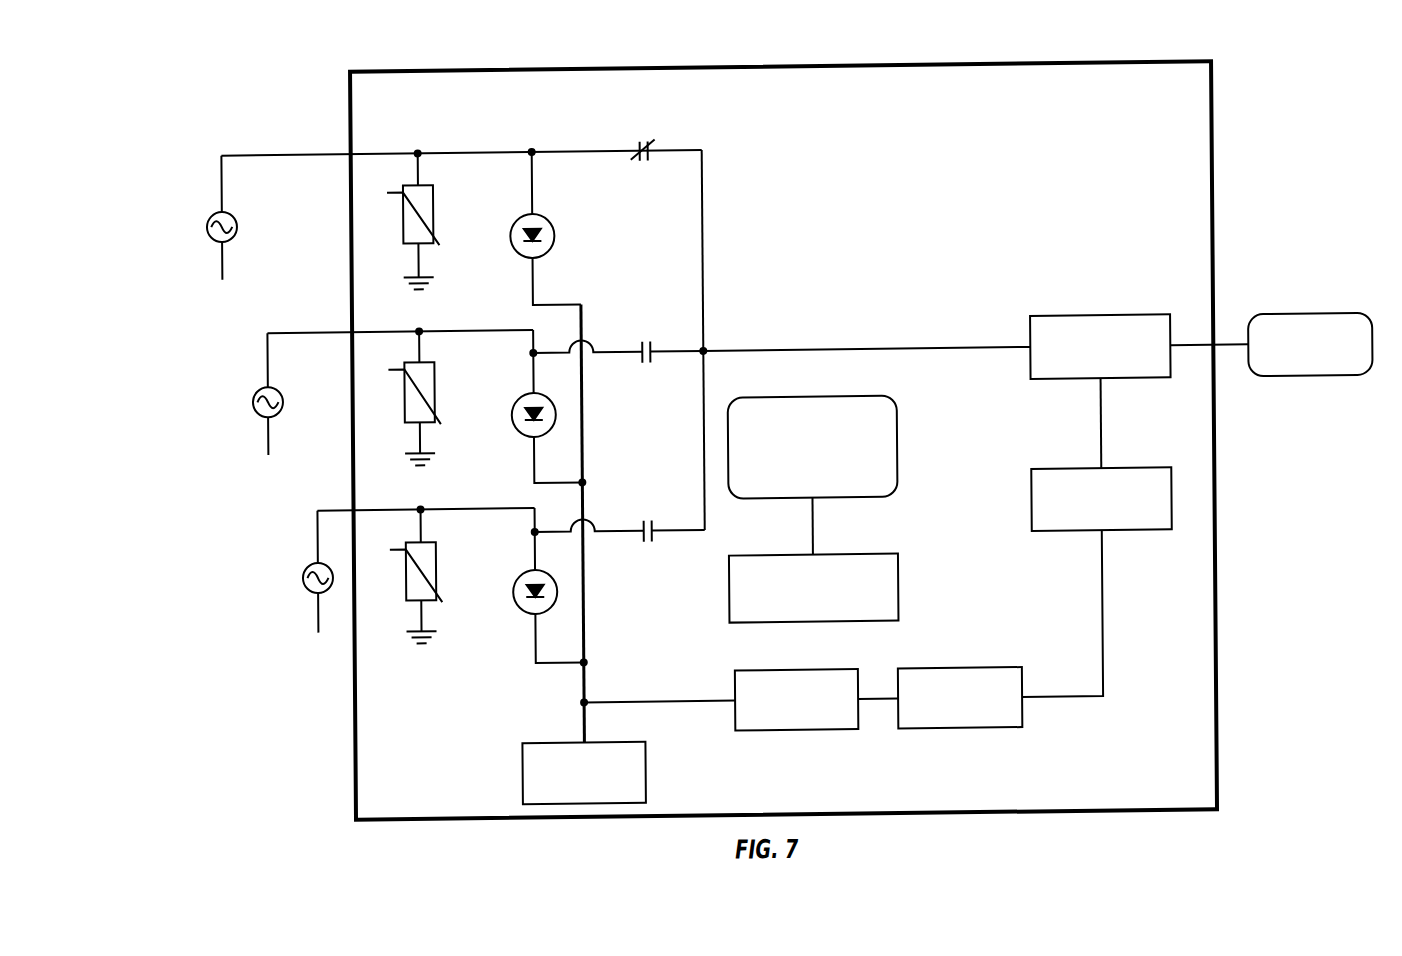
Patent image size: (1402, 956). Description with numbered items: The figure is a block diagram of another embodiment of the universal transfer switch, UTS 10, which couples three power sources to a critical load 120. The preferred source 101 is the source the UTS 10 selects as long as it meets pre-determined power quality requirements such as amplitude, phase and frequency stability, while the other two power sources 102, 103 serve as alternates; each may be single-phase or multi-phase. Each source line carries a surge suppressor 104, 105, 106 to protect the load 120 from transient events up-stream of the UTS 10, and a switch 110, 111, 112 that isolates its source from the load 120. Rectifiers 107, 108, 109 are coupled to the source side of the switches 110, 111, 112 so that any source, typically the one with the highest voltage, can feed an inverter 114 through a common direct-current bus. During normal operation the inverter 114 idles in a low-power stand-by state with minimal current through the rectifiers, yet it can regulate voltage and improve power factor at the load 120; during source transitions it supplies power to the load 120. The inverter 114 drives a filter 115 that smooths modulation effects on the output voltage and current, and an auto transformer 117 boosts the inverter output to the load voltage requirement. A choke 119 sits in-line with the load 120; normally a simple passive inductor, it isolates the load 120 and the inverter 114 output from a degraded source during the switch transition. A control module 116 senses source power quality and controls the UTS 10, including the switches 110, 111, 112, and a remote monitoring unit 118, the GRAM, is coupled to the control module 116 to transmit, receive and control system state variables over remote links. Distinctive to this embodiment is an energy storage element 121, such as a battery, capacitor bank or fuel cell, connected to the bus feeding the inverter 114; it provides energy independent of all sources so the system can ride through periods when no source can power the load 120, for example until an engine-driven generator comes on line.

The UTS 10 is at (1168, 66).
The preferred source 101 is at (239, 218).
The power source 102 is at (283, 394).
The power source 103 is at (312, 590).
The surge suppressor 104 is at (439, 219).
The surge suppressor 105 is at (439, 398).
The surge suppressor 106 is at (439, 577).
The rectifier 107 is at (519, 218).
The rectifier 108 is at (519, 397).
The rectifier 109 is at (519, 574).
The switch 110 is at (648, 139).
The switch 111 is at (650, 337).
The switch 112 is at (650, 517).
The inverter 114 is at (798, 670).
The filter 115 is at (961, 672).
The control module 116 is at (841, 556).
The auto transformer 117 is at (1108, 472).
The remote monitoring unit 118 is at (838, 398).
The choke 119 is at (1106, 319).
The load 120 is at (1313, 320).
The energy storage element 121 is at (606, 740).